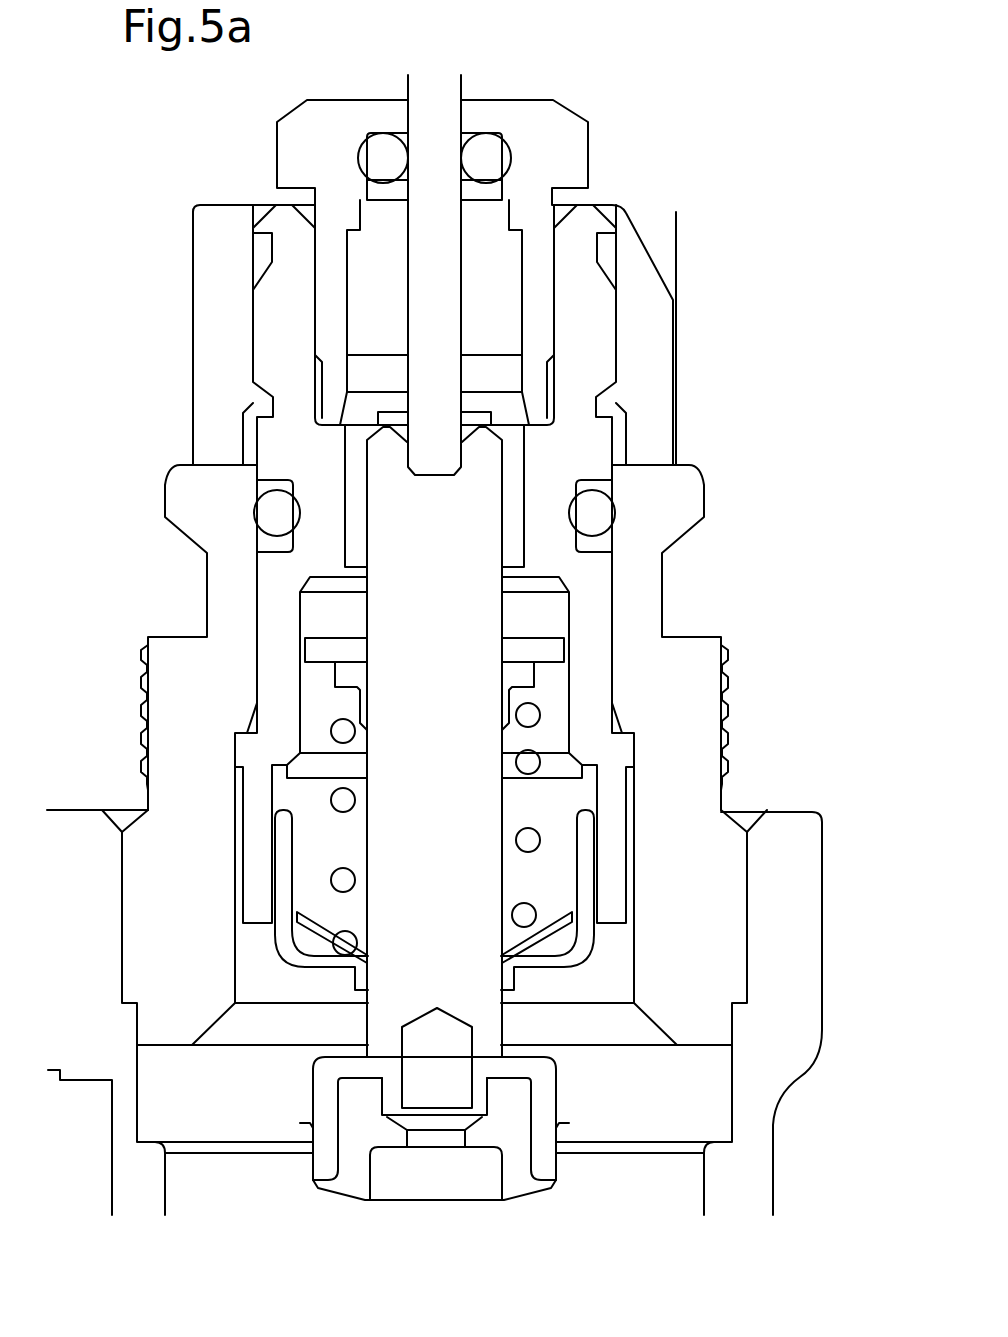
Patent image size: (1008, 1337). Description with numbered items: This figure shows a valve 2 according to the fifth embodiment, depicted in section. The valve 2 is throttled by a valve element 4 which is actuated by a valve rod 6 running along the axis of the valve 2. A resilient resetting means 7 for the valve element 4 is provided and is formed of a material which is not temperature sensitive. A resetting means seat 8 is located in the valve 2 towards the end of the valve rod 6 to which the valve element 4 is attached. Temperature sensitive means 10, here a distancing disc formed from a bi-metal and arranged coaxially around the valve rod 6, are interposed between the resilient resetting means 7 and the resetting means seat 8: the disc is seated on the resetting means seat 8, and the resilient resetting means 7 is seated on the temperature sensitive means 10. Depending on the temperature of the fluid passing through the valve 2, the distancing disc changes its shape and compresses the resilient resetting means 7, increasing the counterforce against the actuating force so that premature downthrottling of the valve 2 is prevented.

The valve 2 is at (857, 293).
The valve element 4 is at (335, 1190).
The valve rod 6 is at (393, 723).
The resilient resetting means 7 is at (528, 715).
The resetting means seat 8 is at (318, 958).
The temperature sensitive means 10 is at (565, 963).